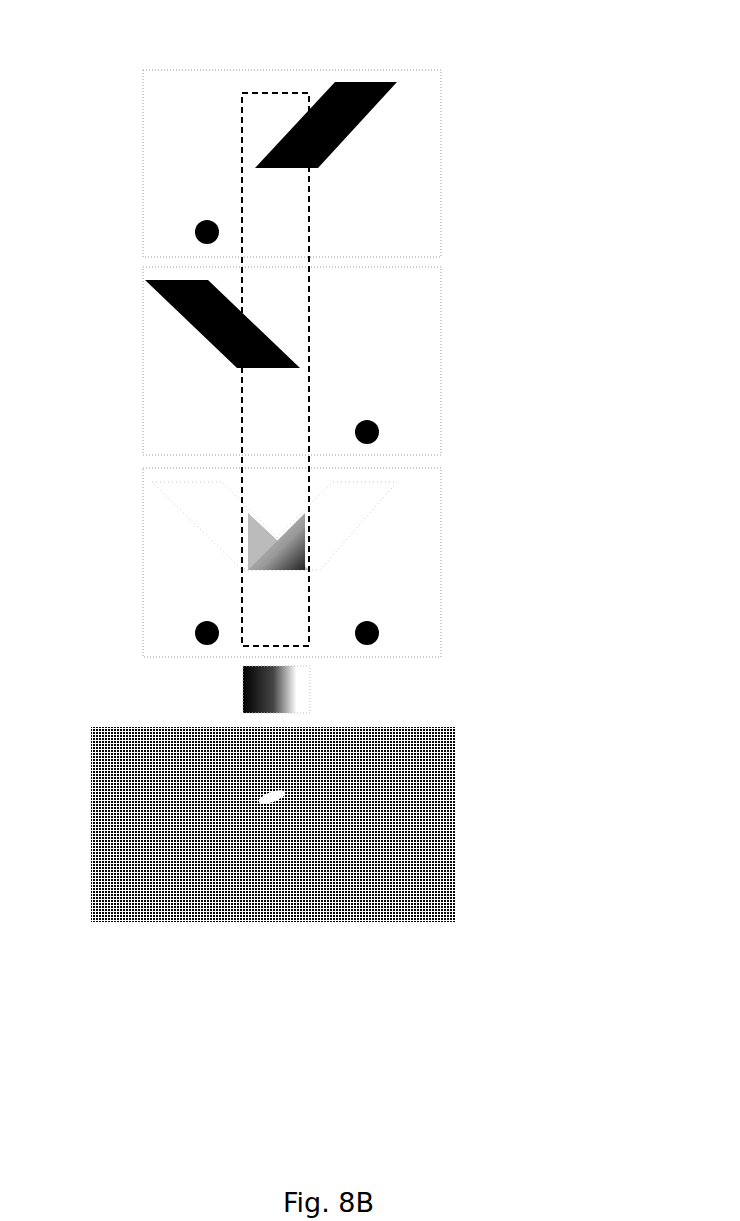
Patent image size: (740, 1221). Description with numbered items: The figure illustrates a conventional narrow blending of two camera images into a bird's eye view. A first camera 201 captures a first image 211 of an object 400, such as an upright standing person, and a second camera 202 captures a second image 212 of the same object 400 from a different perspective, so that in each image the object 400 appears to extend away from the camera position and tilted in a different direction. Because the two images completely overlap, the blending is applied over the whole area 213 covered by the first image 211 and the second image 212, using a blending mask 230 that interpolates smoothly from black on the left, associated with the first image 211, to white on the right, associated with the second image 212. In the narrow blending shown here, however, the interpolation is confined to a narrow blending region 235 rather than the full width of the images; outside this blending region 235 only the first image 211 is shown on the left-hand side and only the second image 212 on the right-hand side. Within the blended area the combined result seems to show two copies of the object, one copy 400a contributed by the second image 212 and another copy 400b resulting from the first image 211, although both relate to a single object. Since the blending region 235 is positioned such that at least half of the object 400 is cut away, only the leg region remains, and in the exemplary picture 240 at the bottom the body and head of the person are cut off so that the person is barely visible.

The blending region 235 is at (242, 107).
The first image 211 is at (442, 215).
The second image 212 is at (442, 372).
The area covered by the first image and the second image 213 is at (442, 570).
The first camera 201 is at (208, 222).
The second camera 202 is at (368, 418).
The object 400 is at (300, 170).
The copy of the object from the second image 400a is at (170, 495).
The copy of the object from the first image 400b is at (363, 512).
The blending mask 230 is at (310, 702).
The exemplary picture 240 is at (457, 797).